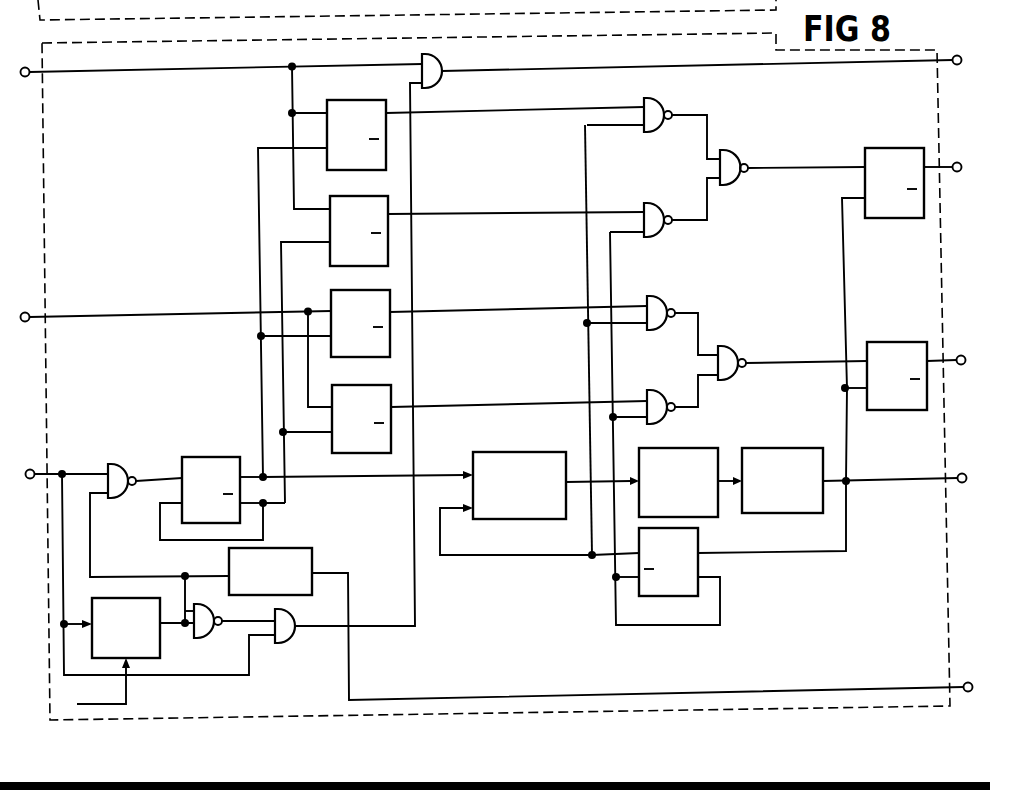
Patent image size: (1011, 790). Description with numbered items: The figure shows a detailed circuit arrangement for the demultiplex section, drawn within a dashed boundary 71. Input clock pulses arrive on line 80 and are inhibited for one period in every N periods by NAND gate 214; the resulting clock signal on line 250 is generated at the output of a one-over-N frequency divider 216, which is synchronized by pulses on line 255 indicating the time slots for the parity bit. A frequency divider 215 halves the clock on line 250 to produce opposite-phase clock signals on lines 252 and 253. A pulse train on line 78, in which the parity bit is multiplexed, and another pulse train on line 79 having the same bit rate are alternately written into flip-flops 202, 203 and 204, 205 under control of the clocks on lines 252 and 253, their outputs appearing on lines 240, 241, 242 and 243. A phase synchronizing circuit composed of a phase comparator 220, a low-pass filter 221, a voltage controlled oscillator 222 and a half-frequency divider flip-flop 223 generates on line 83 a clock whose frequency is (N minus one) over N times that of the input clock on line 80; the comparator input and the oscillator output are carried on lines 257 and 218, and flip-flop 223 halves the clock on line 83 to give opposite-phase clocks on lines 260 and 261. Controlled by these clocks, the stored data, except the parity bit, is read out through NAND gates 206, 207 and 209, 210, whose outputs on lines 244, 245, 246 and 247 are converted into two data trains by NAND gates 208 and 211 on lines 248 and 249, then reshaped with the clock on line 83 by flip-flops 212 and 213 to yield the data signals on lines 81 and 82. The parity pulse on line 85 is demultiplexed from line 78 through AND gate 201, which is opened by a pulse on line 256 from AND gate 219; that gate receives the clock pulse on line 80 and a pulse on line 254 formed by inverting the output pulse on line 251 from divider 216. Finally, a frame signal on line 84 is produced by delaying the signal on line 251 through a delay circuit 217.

The receiver circuit boundary 71 is at (941, 124).
The pulse train line 78 is at (164, 68).
The pulse train line 79 is at (156, 315).
The input clock pulse line 80 is at (64, 471).
The data signal output line 81 is at (944, 167).
The data signal output line 82 is at (945, 360).
The clock signal line 83 is at (897, 479).
The frame signal line 84 is at (891, 689).
The parity pulse line 85 is at (827, 66).
The AND gate 201 is at (442, 56).
The flip-flop 202 is at (355, 100).
The flip-flop 203 is at (357, 196).
The flip-flop 204 is at (358, 290).
The flip-flop 205 is at (358, 385).
The NAND gate 206 is at (659, 101).
The NAND gate 207 is at (656, 208).
The NAND gate 208 is at (736, 153).
The NAND gate 209 is at (659, 295).
The NAND gate 210 is at (653, 390).
The NAND gate 211 is at (733, 352).
The flip-flop 212 is at (889, 148).
The flip-flop 213 is at (890, 342).
The NAND gate 214 is at (122, 464).
The frequency divider 215 is at (200, 457).
The 1/N frequency divider 216 is at (162, 646).
The delay circuit 217 is at (288, 548).
The NAND gate / line 218 is at (728, 472).
The AND gate 219 is at (294, 641).
The phase comparator 220 is at (529, 452).
The low-pass filter 221 is at (668, 448).
The voltage controlled oscillator 222 is at (778, 448).
The flip-flop (½ frequency divider) 223 is at (674, 596).
The line 240 is at (473, 112).
The line 241 is at (474, 214).
The line 242 is at (474, 309).
The line 243 is at (474, 404).
The line 244 is at (713, 140).
The line 245 is at (716, 208).
The line 246 is at (701, 332).
The line 247 is at (704, 398).
The line 248 is at (801, 168).
The line 249 is at (781, 363).
The clock signal line 250 is at (161, 484).
The output pulse line 251 is at (108, 577).
The clock signal line 252 is at (256, 396).
The clock signal line 253 is at (287, 488).
The pulse line 254 is at (255, 640).
The frame synchronizing pulse line 255 is at (129, 680).
The pulse line 256 is at (418, 593).
The line 257 is at (621, 473).
The clock signal line 260 is at (476, 556).
The clock signal line 261 is at (660, 626).